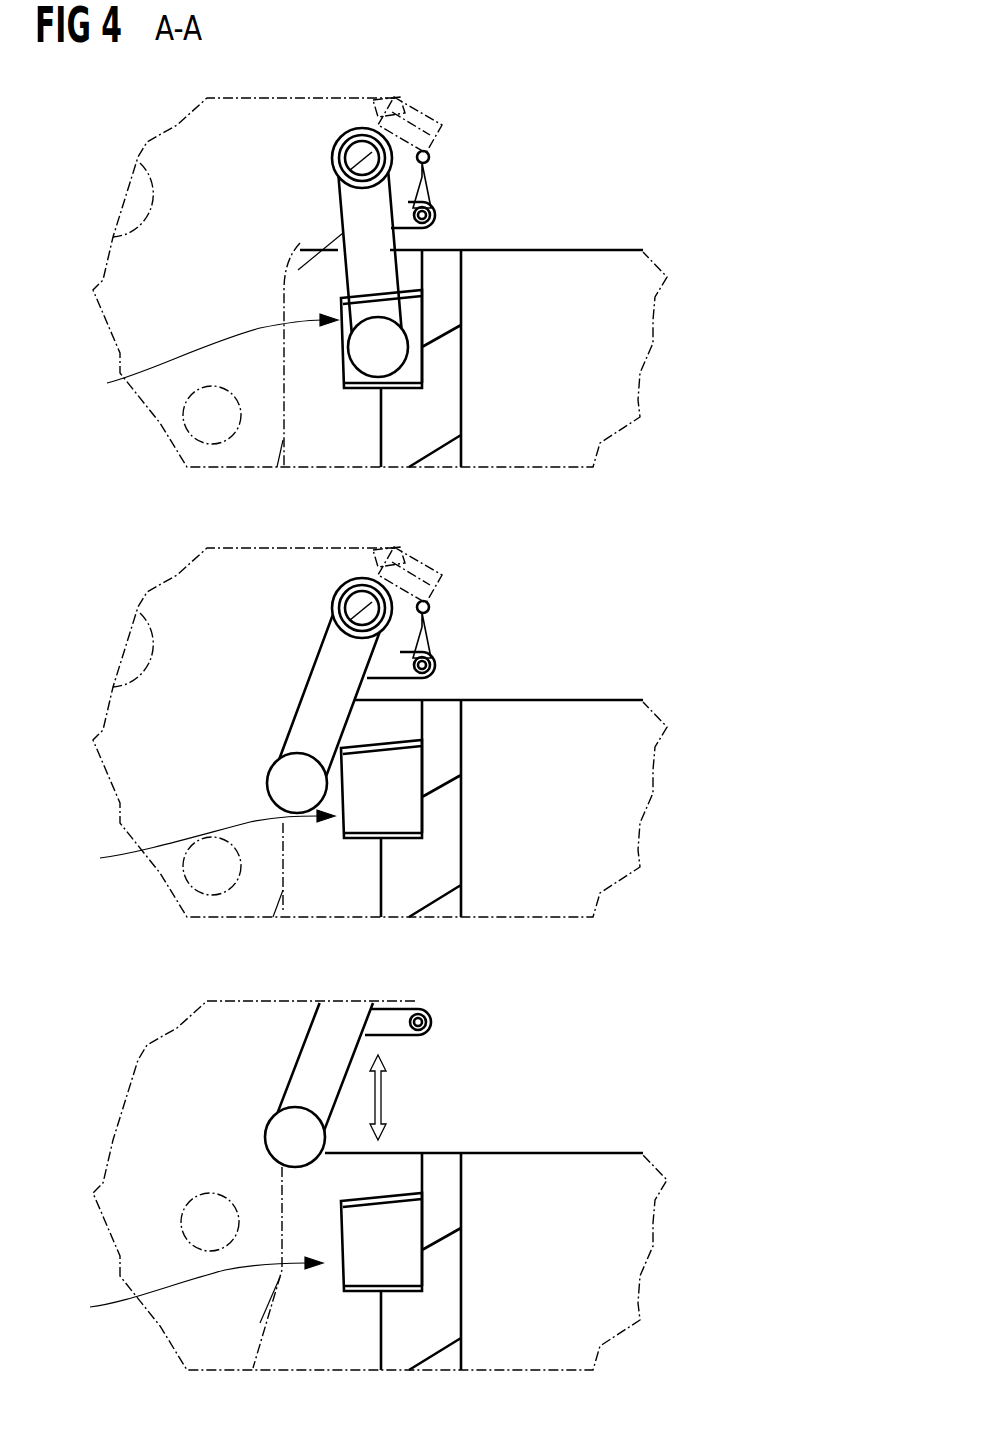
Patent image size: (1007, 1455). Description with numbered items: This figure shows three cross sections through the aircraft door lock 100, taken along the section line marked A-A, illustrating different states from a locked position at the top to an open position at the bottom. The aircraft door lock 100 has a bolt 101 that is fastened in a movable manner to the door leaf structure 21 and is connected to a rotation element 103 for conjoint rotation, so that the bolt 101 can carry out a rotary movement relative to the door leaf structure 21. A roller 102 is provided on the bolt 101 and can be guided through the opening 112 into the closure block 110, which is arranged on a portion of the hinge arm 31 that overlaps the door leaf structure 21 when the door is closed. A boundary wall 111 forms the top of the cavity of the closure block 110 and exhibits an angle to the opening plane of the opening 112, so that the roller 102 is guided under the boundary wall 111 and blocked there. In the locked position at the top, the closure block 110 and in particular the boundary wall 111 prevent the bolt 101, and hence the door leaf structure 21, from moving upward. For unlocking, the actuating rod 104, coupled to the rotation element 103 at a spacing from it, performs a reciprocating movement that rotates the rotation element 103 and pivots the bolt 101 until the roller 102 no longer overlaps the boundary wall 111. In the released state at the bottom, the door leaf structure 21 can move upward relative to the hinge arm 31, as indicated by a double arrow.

The door leaf structure 21 is at (160, 423).
The hinge arm 31 is at (447, 275).
The aircraft door lock 100 is at (662, 121).
The bolt 101 is at (347, 208).
The roller 102 is at (388, 337).
The rotation element 103 is at (412, 160).
The actuating rod 104 is at (433, 210).
The closure block 110 is at (400, 385).
The boundary wall 111 is at (352, 292).
The opening 112 is at (190, 819).